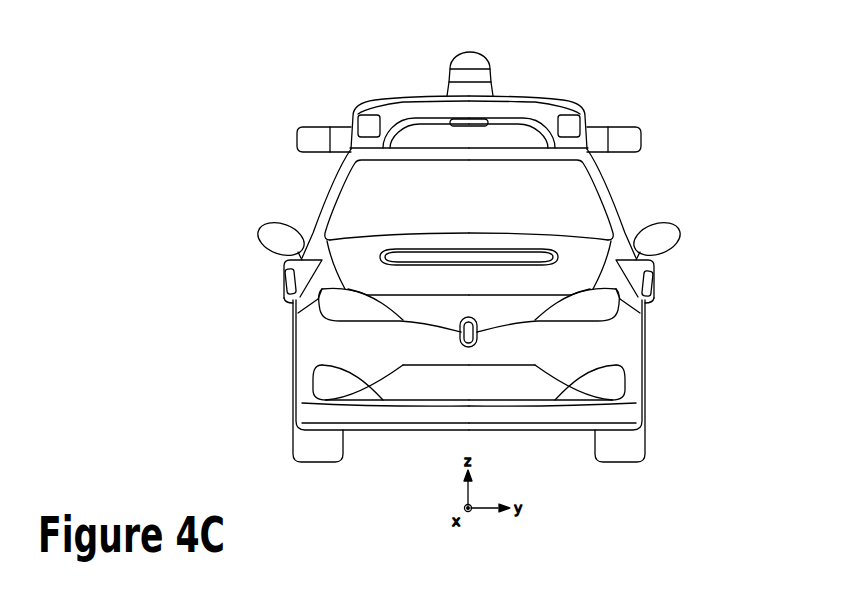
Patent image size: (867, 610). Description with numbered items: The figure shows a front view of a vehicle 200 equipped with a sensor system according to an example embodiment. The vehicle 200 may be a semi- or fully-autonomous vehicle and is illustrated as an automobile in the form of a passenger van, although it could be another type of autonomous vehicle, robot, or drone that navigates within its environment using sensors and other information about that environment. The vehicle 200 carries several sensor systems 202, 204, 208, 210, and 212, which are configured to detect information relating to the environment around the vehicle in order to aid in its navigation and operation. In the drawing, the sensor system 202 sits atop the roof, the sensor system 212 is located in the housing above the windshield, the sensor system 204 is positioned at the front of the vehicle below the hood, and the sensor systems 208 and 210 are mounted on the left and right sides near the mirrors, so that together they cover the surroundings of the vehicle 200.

The vehicle 200 is at (673, 85).
The sensor system 202 is at (490, 57).
The sensor system 204 is at (470, 344).
The sensor system 208 is at (285, 278).
The sensor system 210 is at (653, 285).
The sensor system 212 is at (467, 126).